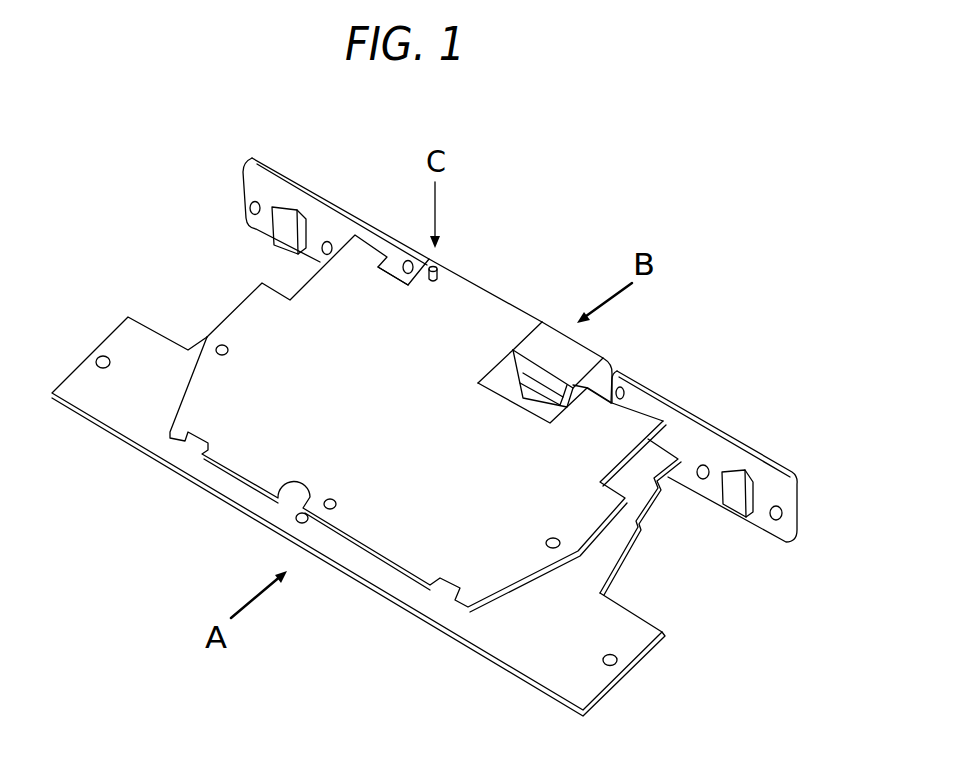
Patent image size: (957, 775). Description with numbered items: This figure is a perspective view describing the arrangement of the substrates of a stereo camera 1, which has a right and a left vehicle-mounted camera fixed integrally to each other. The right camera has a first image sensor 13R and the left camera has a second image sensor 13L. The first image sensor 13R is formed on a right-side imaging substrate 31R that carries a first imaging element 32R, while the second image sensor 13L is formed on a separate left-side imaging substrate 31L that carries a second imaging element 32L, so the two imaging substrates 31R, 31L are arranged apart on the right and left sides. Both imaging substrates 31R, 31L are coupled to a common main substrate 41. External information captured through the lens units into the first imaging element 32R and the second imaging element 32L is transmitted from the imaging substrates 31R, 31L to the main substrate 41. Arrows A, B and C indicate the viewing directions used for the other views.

The stereo camera 1 is at (589, 136).
The main substrate 41 is at (140, 433).
The first image sensor 13R is at (354, 202).
The imaging substrate 31R is at (321, 238).
The first imaging element 32R is at (287, 227).
The second image sensor 13L is at (686, 402).
The imaging substrate 31L is at (705, 442).
The second imaging element 32L is at (737, 495).